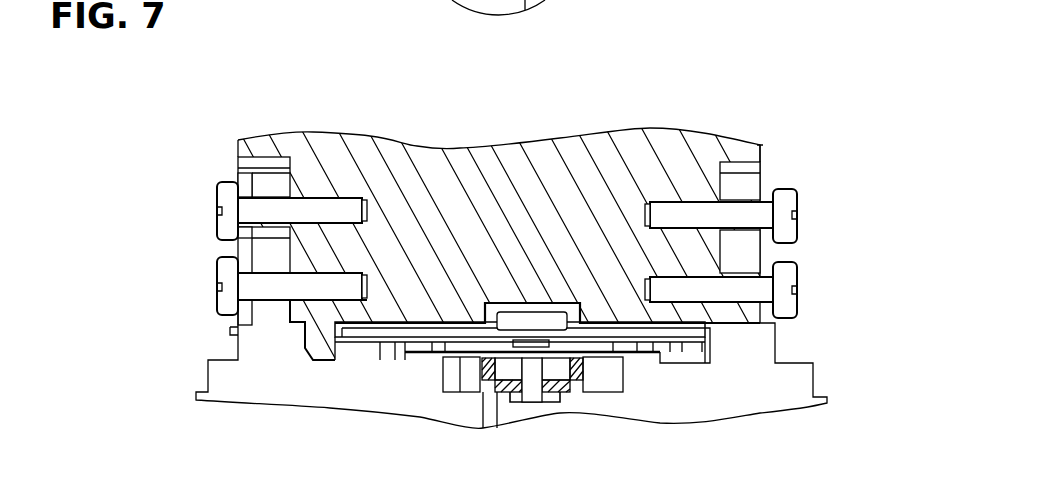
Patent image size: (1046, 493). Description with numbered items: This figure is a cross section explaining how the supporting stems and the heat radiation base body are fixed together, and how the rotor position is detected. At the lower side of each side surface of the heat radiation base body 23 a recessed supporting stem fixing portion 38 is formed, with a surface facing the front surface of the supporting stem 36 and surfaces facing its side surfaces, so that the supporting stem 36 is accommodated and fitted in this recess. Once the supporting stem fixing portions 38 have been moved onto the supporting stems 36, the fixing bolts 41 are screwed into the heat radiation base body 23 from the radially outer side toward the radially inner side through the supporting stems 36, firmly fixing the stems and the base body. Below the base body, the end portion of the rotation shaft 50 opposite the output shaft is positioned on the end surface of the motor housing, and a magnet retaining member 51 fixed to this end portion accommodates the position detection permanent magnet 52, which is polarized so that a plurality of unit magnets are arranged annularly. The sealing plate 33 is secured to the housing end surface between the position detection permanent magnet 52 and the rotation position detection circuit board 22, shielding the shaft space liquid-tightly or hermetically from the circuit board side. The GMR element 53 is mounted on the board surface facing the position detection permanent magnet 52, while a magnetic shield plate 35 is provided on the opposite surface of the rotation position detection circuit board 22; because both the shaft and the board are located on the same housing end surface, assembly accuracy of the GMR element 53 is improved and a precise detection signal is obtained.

The rotation position detection circuit board 22 is at (367, 333).
The heat radiation base body 23 is at (588, 134).
The sealing plate 33 is at (460, 393).
The magnetic shield plate 35 is at (510, 305).
The supporting stem 36 is at (262, 185).
The supporting stem fixing portion 38 is at (238, 172).
The fixing bolt 41 is at (220, 290).
The rotation shaft 50 is at (521, 403).
The magnet retaining member 51 is at (586, 383).
The position detection permanent magnet 52 is at (558, 398).
The GMR element 53 is at (547, 340).